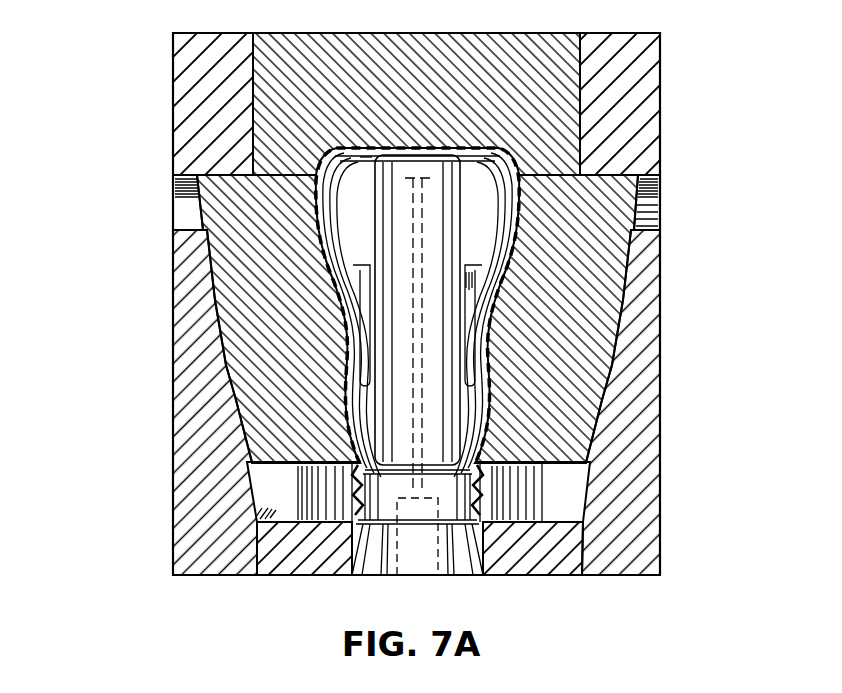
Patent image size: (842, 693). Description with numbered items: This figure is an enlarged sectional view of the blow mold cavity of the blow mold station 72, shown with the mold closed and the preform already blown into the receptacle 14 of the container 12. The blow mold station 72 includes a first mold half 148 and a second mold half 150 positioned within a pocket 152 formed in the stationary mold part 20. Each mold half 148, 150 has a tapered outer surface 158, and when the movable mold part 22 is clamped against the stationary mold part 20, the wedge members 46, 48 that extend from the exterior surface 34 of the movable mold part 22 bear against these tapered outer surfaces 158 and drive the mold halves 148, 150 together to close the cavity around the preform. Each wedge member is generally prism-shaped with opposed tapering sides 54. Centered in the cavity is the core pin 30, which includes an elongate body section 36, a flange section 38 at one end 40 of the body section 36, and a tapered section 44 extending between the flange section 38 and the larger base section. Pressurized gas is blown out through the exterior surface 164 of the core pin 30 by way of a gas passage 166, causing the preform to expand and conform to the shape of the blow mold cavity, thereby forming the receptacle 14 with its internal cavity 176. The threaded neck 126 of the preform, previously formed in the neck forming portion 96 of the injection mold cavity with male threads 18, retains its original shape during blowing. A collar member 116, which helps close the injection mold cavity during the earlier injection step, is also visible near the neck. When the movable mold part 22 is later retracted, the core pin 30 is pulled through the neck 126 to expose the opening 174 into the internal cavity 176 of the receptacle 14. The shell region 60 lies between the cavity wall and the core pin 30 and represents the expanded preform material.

The stationary mold part 20 is at (664, 77).
The opposed side 54 is at (246, 258).
The receptacle 14 is at (467, 150).
The blow mold station 72 is at (488, 128).
The tapered outer surface 158 is at (214, 284).
The wedge member 48 is at (213, 575).
The wedge member 46 is at (621, 575).
The second mold half 150 is at (198, 201).
The first mold half 148 is at (641, 197).
The pocket 152 is at (648, 213).
The container 12 is at (425, 149).
The shell material layers 60 is at (330, 257).
The core pin 30 is at (373, 217).
The elongate body section 36 is at (445, 316).
The gas passage 166 is at (428, 345).
The exterior surface 164 is at (465, 376).
The internal cavity 176 is at (366, 157).
The end 40 is at (357, 458).
The flange section 38 is at (380, 487).
The neck forming portion 96 is at (475, 481).
The exterior surface 34 is at (562, 520).
The movable mold part 22 is at (556, 578).
The tapered section 44 is at (471, 576).
The threaded neck 126 is at (482, 505).
The collar member 116 is at (297, 520).
The threads 18 is at (352, 520).
The opening 174 is at (367, 520).